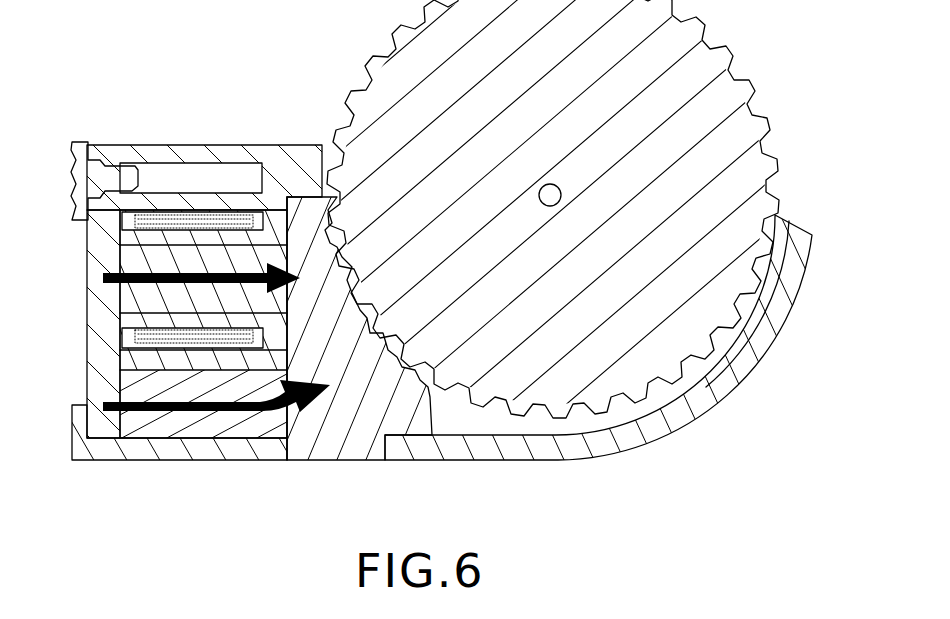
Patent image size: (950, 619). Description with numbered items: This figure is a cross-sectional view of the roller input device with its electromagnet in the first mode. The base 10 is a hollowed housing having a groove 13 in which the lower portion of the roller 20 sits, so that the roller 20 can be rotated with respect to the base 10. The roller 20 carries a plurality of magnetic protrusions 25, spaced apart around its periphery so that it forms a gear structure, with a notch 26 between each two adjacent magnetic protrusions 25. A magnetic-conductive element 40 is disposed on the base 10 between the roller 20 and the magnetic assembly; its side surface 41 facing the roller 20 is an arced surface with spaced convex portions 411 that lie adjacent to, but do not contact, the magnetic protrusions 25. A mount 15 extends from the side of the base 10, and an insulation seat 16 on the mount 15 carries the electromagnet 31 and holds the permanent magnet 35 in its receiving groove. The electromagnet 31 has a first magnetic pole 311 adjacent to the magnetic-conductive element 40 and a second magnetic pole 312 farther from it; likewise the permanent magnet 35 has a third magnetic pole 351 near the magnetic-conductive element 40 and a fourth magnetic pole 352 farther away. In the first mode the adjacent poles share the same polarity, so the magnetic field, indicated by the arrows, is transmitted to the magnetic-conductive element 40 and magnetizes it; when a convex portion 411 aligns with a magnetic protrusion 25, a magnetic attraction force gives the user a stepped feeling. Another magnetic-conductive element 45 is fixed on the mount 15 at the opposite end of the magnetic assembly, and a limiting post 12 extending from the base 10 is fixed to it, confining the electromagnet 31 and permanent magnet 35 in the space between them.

The base 10 is at (783, 296).
The limiting post 12 is at (190, 150).
The groove 13 is at (775, 255).
The mount 15 is at (153, 462).
The insulation seat 16 is at (150, 362).
The roller 20 is at (797, 192).
The magnetic protrusion 25 is at (397, 28).
The notch 26 is at (388, 50).
The electromagnet 31 is at (118, 243).
The first magnetic pole 311 is at (303, 207).
The second magnetic pole 312 is at (125, 264).
The permanent magnet 35 is at (198, 462).
The third magnetic pole 351 is at (298, 433).
The fourth magnetic pole 352 is at (105, 462).
The magnetic-conductive element 40 is at (257, 462).
The side surface 41 is at (432, 395).
The convex portion 411 is at (345, 372).
The magnetic-conductive element 45 is at (100, 320).